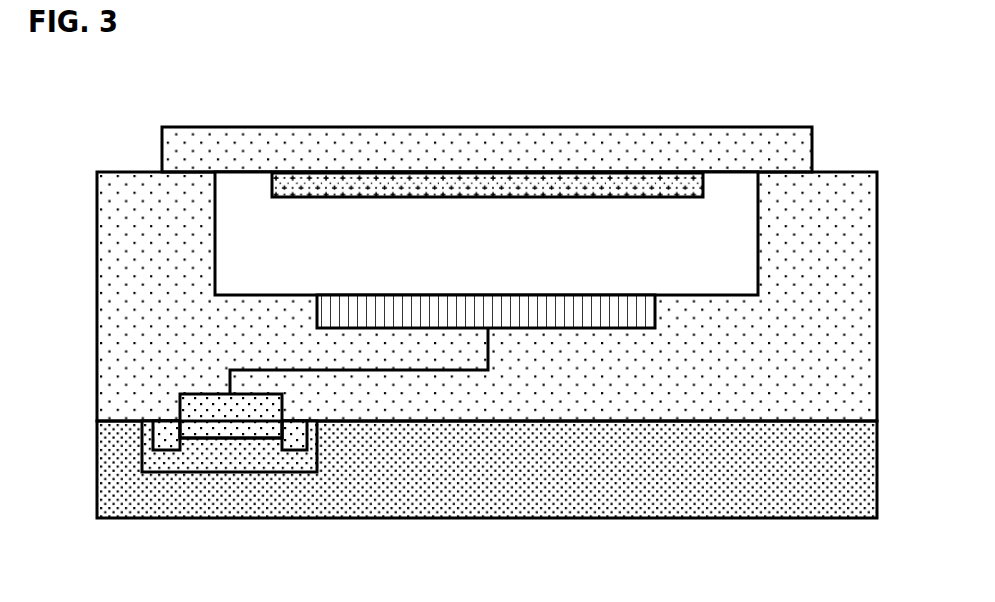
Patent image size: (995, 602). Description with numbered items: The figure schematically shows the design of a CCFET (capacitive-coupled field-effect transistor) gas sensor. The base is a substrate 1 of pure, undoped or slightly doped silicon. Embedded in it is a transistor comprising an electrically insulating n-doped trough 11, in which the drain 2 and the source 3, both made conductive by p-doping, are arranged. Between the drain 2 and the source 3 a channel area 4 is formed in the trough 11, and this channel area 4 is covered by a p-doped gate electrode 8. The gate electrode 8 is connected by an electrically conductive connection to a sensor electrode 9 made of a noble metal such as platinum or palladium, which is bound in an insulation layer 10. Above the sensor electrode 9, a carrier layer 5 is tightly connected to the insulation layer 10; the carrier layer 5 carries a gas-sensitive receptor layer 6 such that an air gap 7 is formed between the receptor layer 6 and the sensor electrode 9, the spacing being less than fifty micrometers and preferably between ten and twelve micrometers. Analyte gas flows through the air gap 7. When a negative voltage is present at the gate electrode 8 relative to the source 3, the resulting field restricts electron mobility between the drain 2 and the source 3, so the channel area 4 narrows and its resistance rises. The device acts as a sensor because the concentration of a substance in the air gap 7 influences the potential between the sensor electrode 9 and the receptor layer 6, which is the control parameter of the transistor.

The substrate 1 is at (683, 485).
The drain 2 is at (167, 450).
The source 3 is at (293, 450).
The channel area 4 is at (222, 438).
The carrier layer 5 is at (250, 152).
The receptor layer 6 is at (443, 190).
The air gap 7 is at (575, 220).
The gate electrode 8 is at (195, 410).
The sensor electrode 9 is at (340, 314).
The insulation layer 10 is at (828, 208).
The n-doped trough 11 is at (247, 460).